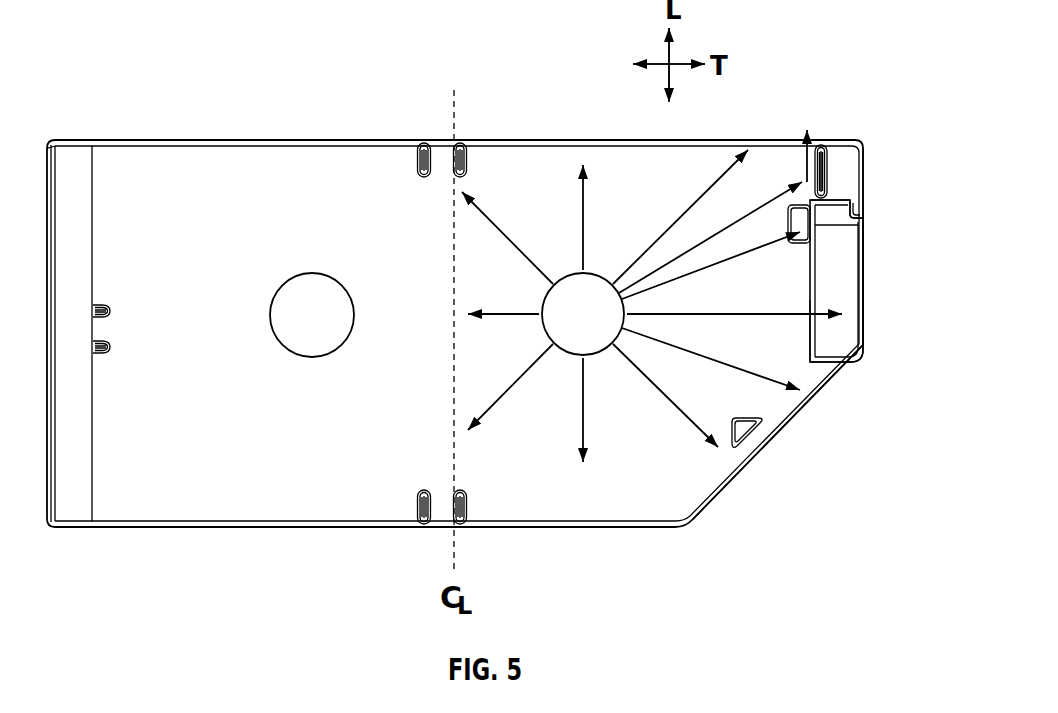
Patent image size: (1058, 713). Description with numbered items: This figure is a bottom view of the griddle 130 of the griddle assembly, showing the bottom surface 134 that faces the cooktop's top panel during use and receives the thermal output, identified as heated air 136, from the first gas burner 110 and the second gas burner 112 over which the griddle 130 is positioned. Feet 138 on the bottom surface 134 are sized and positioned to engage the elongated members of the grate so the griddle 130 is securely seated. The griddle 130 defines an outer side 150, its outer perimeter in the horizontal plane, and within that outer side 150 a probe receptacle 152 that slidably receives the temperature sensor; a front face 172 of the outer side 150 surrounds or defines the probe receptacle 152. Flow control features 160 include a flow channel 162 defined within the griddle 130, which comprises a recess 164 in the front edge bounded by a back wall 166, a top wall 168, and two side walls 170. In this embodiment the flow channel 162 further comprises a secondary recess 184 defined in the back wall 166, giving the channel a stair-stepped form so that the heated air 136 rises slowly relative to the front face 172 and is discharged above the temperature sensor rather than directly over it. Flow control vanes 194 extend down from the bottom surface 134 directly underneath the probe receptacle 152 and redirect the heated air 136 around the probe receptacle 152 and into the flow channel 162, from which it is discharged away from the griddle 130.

The first gas burner 110 is at (313, 292).
The second gas burner 112 is at (573, 292).
The griddle 130 is at (356, 96).
The bottom surface 134 is at (290, 437).
The heated air 136 is at (688, 215).
The feet 138 is at (108, 312).
The outer side 150 is at (797, 422).
The probe receptacle 152 is at (866, 178).
The flow control features 160 is at (874, 292).
The flow channel 162 is at (845, 265).
The recess 164 is at (848, 348).
The back wall 166 is at (812, 347).
The top wall 168 is at (848, 325).
The side walls 170 is at (840, 200).
The front face 172 is at (866, 206).
The secondary recess 184 is at (802, 238).
The flow control vanes 194 is at (822, 152).